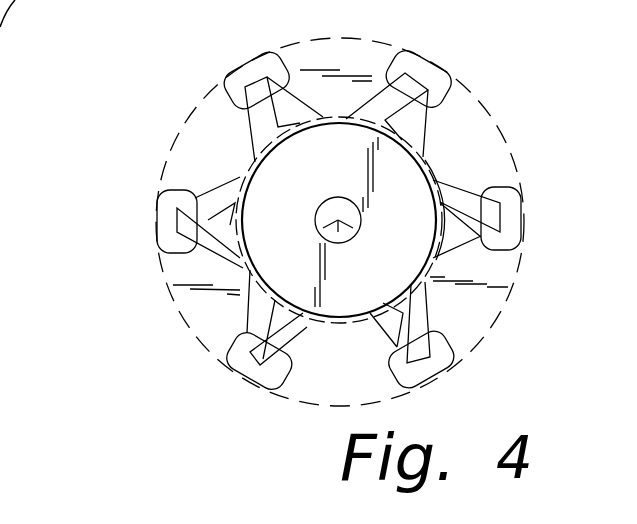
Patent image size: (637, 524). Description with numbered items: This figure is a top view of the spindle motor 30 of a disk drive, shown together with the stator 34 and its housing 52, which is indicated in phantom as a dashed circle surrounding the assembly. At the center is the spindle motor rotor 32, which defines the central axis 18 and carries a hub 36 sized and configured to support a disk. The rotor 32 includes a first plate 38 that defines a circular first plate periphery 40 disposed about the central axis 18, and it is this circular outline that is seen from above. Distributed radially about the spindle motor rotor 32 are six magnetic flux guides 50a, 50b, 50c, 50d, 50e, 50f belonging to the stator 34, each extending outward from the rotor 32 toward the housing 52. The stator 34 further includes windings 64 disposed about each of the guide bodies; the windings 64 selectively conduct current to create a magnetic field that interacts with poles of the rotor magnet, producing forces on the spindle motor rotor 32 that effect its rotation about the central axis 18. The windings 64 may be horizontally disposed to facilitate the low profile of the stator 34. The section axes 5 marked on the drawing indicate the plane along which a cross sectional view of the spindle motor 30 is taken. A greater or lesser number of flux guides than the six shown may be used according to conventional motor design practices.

The central axis 18 is at (343, 237).
The spindle motor 30 is at (244, 220).
The spindle motor rotor 32 is at (274, 179).
The stator 34 is at (185, 174).
The hub 36 is at (317, 212).
The first plate 38 is at (433, 178).
The first plate periphery 40 is at (430, 165).
The magnetic flux guide 50a is at (500, 217).
The magnetic flux guide 50b is at (432, 63).
The magnetic flux guide 50c is at (257, 90).
The magnetic flux guide 50d is at (172, 222).
The magnetic flux guide 50e is at (262, 378).
The magnetic flux guide 50f is at (420, 357).
The housing 52 is at (208, 138).
The windings 64 is at (235, 92).
The section axes 5-5- 5 is at (166, 318).